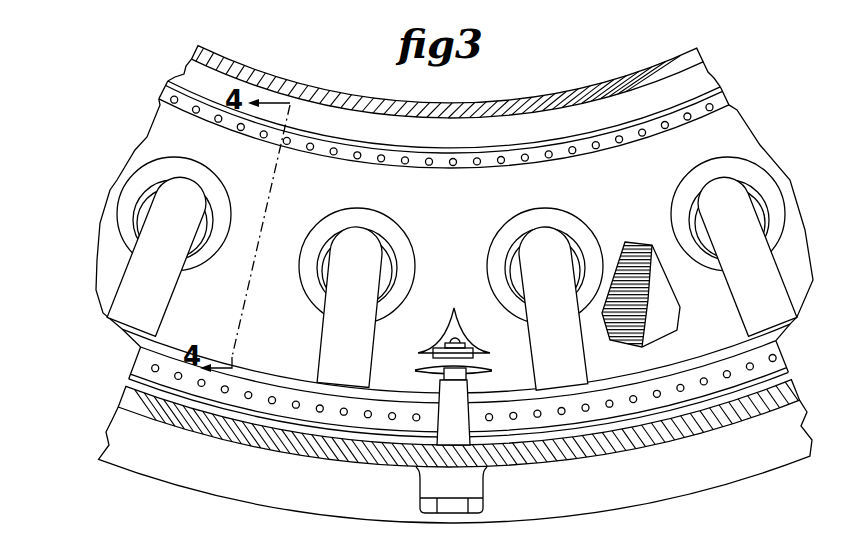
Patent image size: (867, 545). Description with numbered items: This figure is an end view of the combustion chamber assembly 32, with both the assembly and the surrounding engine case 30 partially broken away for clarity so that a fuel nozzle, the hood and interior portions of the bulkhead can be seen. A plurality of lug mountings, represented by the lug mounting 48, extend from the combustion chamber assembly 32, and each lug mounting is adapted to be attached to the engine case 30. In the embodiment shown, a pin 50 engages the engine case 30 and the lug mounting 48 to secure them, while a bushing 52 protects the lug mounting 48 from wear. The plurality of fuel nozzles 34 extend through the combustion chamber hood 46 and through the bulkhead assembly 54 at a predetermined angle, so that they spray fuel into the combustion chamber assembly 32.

The engine case 30 is at (568, 505).
The combustion chamber assembly 32 is at (140, 134).
The fuel nozzles 34 is at (188, 231).
The combustion chamber hood 46 is at (464, 239).
The lug mounting 48 is at (470, 374).
The pin 50 is at (445, 375).
The bushing 52 is at (443, 345).
The bulkhead assembly 54 is at (641, 270).